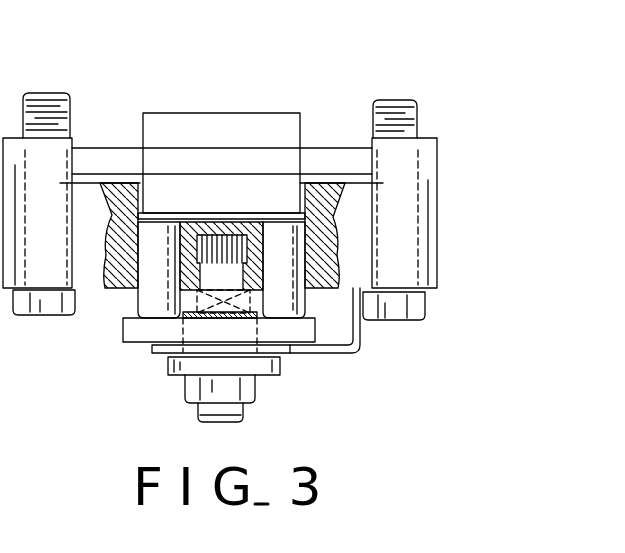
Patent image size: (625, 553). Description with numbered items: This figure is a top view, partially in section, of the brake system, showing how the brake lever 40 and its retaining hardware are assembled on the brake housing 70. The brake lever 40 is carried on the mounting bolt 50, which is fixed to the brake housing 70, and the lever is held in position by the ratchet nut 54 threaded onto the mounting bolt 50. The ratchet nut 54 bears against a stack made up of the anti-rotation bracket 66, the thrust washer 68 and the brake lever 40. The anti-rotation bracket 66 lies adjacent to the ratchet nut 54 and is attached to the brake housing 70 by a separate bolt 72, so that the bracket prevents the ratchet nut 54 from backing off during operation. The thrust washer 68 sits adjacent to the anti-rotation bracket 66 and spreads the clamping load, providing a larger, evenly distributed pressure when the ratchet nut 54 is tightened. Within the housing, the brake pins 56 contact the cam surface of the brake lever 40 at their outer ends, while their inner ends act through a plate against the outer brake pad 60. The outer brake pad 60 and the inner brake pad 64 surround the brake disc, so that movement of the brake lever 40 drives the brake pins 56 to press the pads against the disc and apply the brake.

The brake lever 40 is at (128, 333).
The mounting bolt 50 is at (233, 420).
The ratchet nut 54 is at (275, 360).
The brake pins 56 is at (282, 222).
The outer brake pad 60 is at (165, 192).
The inner brake pad 64 is at (158, 132).
The anti-rotation bracket 66 is at (358, 353).
The thrust washer 68 is at (160, 352).
The brake housing 70 is at (430, 162).
The bolt 72 is at (420, 309).